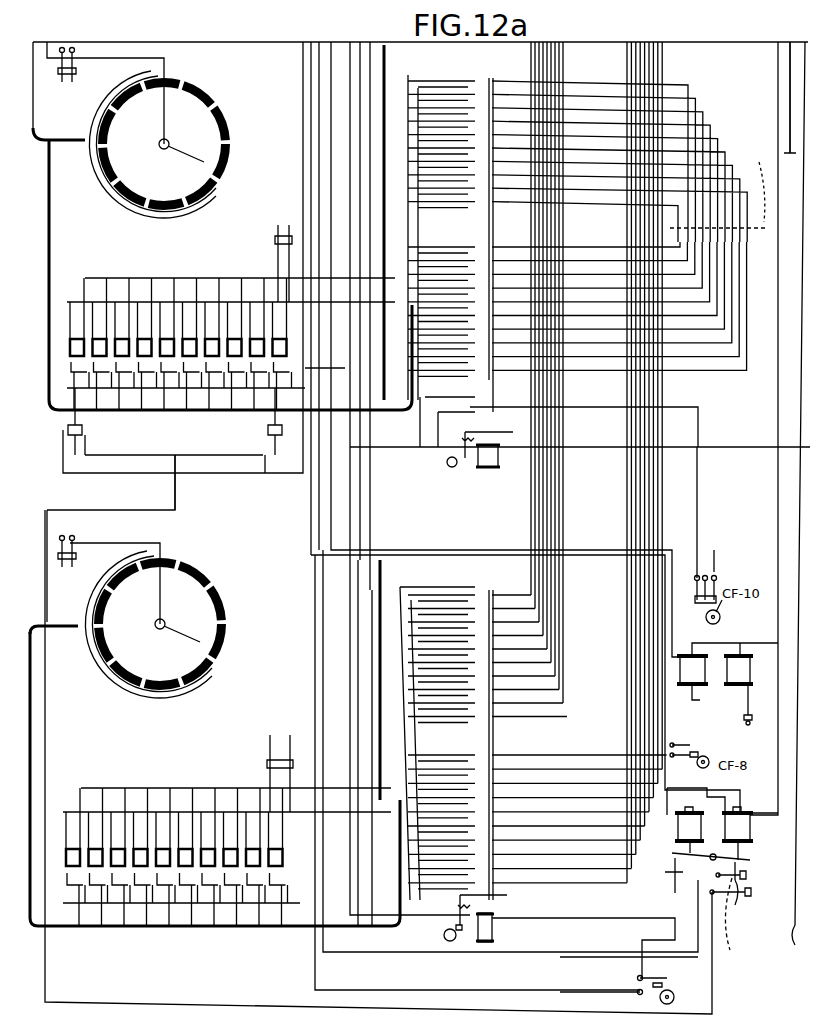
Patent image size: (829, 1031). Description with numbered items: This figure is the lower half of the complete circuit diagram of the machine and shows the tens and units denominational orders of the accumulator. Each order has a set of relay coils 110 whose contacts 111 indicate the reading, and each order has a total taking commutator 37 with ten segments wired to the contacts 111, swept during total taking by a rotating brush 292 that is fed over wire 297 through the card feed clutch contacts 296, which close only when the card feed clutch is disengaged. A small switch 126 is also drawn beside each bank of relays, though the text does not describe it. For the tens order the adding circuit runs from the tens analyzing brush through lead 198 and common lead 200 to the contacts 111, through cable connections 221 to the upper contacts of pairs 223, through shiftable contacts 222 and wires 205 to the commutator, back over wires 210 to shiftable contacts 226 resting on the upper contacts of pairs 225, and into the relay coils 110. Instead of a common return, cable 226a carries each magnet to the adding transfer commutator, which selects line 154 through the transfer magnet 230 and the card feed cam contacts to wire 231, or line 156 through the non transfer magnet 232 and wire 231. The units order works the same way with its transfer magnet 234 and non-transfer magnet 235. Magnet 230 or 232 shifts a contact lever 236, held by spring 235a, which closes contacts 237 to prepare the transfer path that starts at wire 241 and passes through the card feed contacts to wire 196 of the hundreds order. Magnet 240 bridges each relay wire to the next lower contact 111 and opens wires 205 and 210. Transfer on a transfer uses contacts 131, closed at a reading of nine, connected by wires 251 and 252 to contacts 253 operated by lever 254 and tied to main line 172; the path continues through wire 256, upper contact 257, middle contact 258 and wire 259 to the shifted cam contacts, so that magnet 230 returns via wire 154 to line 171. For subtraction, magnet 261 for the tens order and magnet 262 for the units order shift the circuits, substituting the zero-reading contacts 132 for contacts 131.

The total taking commutator 37 is at (192, 584).
The brush 292 is at (213, 638).
The wire 297 is at (122, 542).
The card feed clutch contacts 296 is at (64, 82).
The wire 252 is at (212, 1006).
The relay coils 110 is at (68, 852).
The contacts 111 is at (68, 935).
The switch 126 is at (282, 733).
The lead 198 is at (305, 365).
The wire 196 is at (585, 735).
The wire 231 is at (714, 550).
The wire 241 is at (593, 518).
The cable 226a is at (230, 278).
The pairs of contacts 225 is at (470, 82).
The shiftable contacts 226 is at (496, 82).
The wires 205 is at (655, 74).
The wires 210 is at (566, 68).
The line 171 is at (790, 84).
The magnet 240 is at (725, 194).
The pairs of contacts 223 is at (440, 246).
The shiftable contacts 222 is at (494, 247).
The line 156 is at (778, 530).
The line 154 is at (778, 492).
The wire 259 is at (717, 423).
The upper contact 257 is at (450, 390).
The middle contact 258 is at (493, 404).
The magnet 261 is at (480, 464).
The wire 256 is at (440, 478).
The contacts 131 is at (72, 432).
The wire 251 is at (125, 445).
The cable connections 221 is at (176, 455).
The contacts 132 is at (268, 435).
The common lead 200 is at (226, 450).
The non transfer magnet 232 is at (680, 666).
The transfer magnet 230 is at (746, 655).
The contact lever 236 is at (745, 728).
The contacts 237 is at (687, 742).
The magnet 234 is at (750, 835).
The magnet 235 is at (677, 830).
The lever 254 is at (720, 860).
The contacts 253 is at (738, 899).
The spring 235a is at (735, 925).
The main line 172 is at (794, 936).
The magnet 262 is at (492, 934).